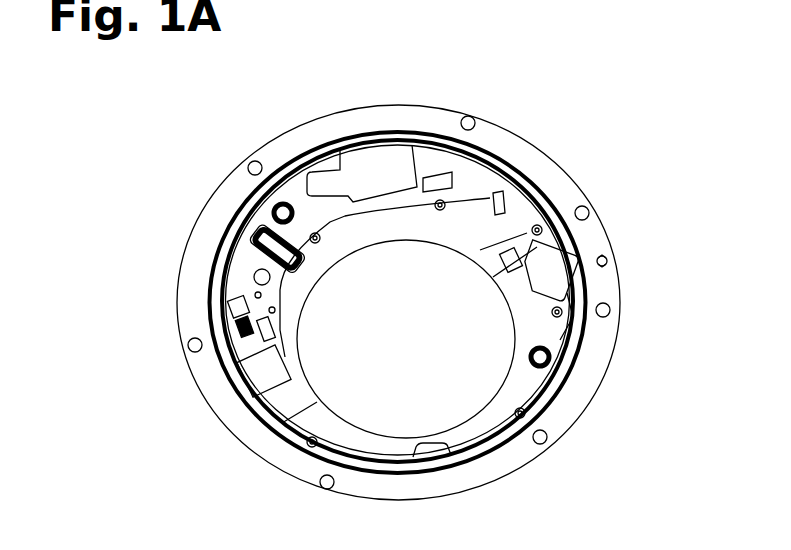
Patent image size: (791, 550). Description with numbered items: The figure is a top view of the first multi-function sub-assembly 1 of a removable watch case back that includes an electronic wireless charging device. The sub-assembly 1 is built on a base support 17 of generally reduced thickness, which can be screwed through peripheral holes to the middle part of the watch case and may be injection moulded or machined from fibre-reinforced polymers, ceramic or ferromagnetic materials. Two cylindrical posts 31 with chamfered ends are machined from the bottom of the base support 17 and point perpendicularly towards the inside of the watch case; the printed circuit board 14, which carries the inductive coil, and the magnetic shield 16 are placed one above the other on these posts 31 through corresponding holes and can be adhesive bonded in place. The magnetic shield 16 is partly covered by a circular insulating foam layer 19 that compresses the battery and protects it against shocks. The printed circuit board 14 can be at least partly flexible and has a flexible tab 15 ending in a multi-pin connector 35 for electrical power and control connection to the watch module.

The first multi-function sub-assembly 1 is at (168, 206).
The printed circuit board 14 is at (233, 350).
The flexible tab 15 is at (345, 220).
The magnetic shield 16 is at (553, 332).
The base support 17 is at (549, 175).
The insulating foam layer 19 is at (391, 422).
The posts 31 is at (285, 208).
The connector 35 is at (253, 238).